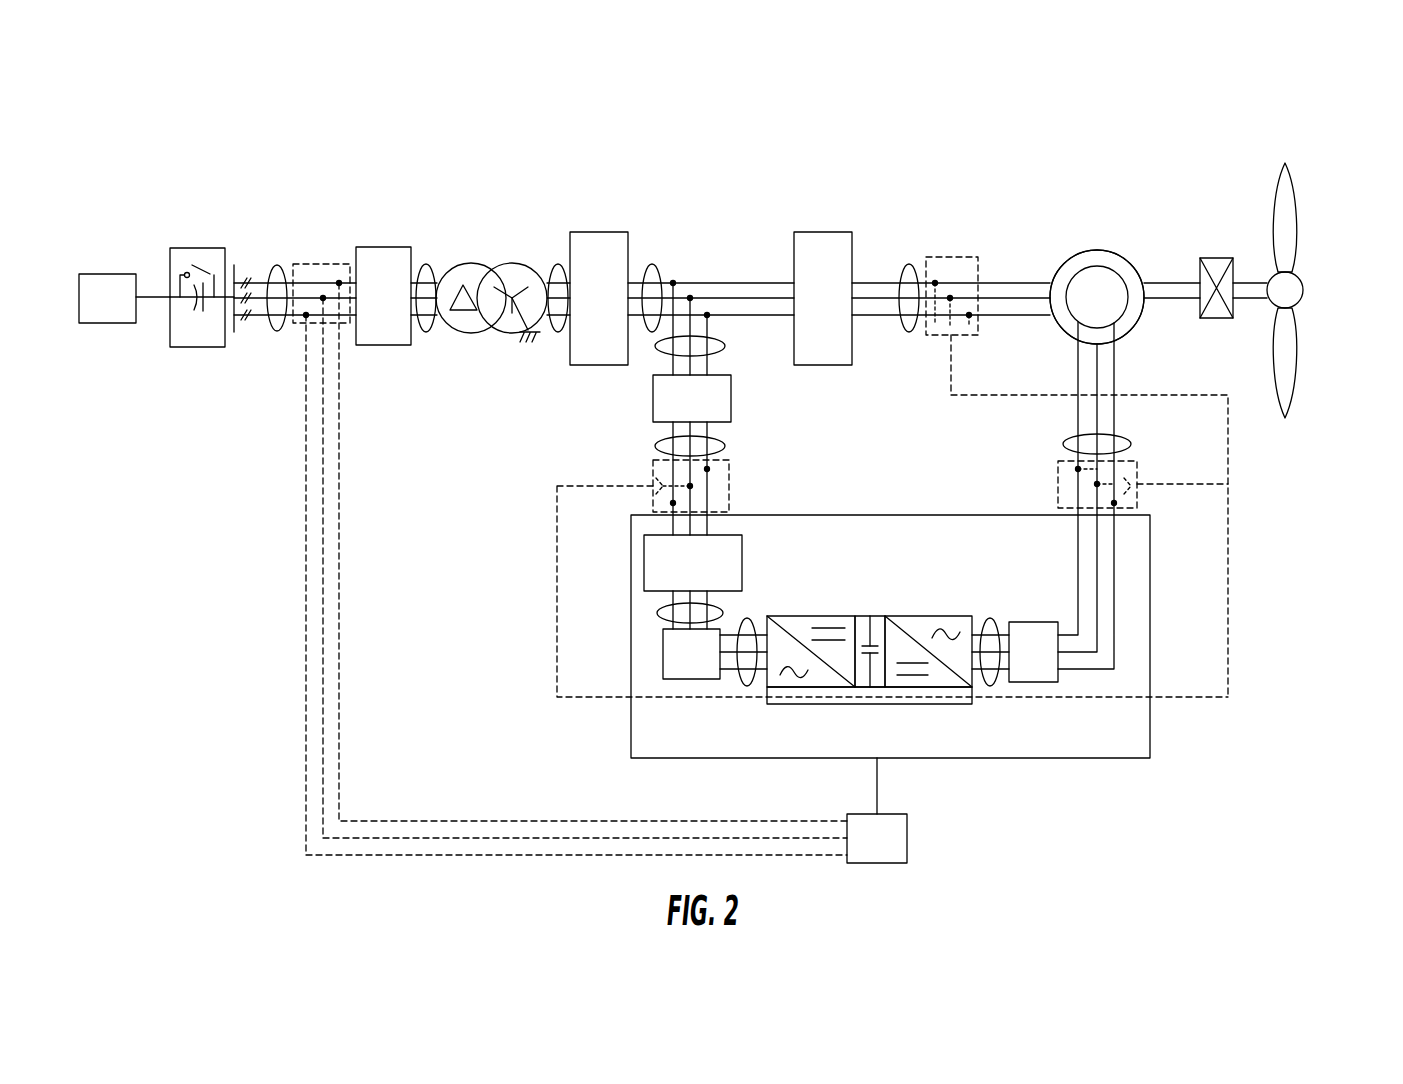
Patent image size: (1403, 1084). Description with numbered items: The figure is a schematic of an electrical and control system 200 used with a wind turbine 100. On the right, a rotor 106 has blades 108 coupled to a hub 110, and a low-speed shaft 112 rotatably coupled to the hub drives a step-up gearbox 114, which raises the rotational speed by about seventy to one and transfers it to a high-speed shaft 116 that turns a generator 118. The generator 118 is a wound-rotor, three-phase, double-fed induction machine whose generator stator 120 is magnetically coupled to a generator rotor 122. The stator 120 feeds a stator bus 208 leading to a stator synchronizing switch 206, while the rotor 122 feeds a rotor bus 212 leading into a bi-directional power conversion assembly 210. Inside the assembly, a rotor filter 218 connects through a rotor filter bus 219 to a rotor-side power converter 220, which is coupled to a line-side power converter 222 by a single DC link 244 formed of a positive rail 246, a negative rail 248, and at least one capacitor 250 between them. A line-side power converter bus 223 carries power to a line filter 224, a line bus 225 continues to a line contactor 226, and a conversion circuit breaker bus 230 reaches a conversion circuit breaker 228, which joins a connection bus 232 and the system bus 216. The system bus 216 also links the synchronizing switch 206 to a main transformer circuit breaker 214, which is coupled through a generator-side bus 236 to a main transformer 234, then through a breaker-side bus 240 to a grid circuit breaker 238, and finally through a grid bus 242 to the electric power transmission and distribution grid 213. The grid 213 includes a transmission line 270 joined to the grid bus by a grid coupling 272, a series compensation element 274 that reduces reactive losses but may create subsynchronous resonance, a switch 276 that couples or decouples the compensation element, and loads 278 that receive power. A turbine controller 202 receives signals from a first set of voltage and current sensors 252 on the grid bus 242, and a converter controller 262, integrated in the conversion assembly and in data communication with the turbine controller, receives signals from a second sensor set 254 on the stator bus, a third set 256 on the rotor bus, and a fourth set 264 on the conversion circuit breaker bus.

The wind turbine 100 is at (1273, 115).
The rotor 106 is at (1340, 236).
The blades 108 is at (1298, 222).
The hub 110 is at (1304, 290).
The low-speed shaft 112 is at (1252, 283).
The step-up gearbox 114 is at (1215, 258).
The high-speed shaft 116 is at (1168, 283).
The generator 118 is at (1097, 179).
The generator stator 120 is at (1097, 250).
The generator rotor 122 is at (1087, 278).
The electrical and control system 200 is at (212, 112).
The turbine controller 202 is at (894, 853).
The stator synchronizing switch 206 is at (822, 232).
The stator bus 208 is at (909, 264).
The power conversion assembly 210 is at (1150, 610).
The rotor bus 212 is at (1120, 440).
The electric power transmission and distribution grid 213 is at (200, 248).
The main transformer circuit breaker 214 is at (597, 232).
The system bus 216 is at (652, 264).
The rotor filter 218 is at (1033, 622).
The rotor filter bus 219 is at (990, 620).
The rotor-side power converter 220 is at (973, 682).
The line-side power converter 222 is at (767, 688).
The line-side power converter bus 223 is at (746, 620).
The line filter 224 is at (663, 648).
The line bus 225 is at (658, 613).
The line contactor 226 is at (644, 562).
The conversion circuit breaker 228 is at (733, 398).
The conversion circuit breaker bus 230 is at (727, 447).
The connection bus 232 is at (730, 346).
The main transformer 234 is at (510, 263).
The generator-side bus 236 is at (558, 264).
The grid circuit breaker 238 is at (390, 247).
The breaker-side bus 240 is at (426, 265).
The grid bus 242 is at (282, 265).
The DC link 244 is at (856, 562).
The positive rail 246 is at (875, 625).
The negative rail 248 is at (875, 687).
The capacitor 250 is at (862, 640).
The first set of voltage and electric current sensors 252 is at (293, 345).
The second set of voltage and electric current sensors 254 is at (978, 241).
The third set of voltage and electric current sensors 256 is at (1030, 483).
The converter controller 262 is at (940, 704).
The fourth set of voltage and electric current sensors 264 is at (735, 486).
The transmission lines 270 is at (186, 303).
The grid coupling 272 is at (234, 266).
The series compensation elements 274 is at (197, 343).
The switches 276 is at (178, 243).
The loads 278 is at (108, 274).